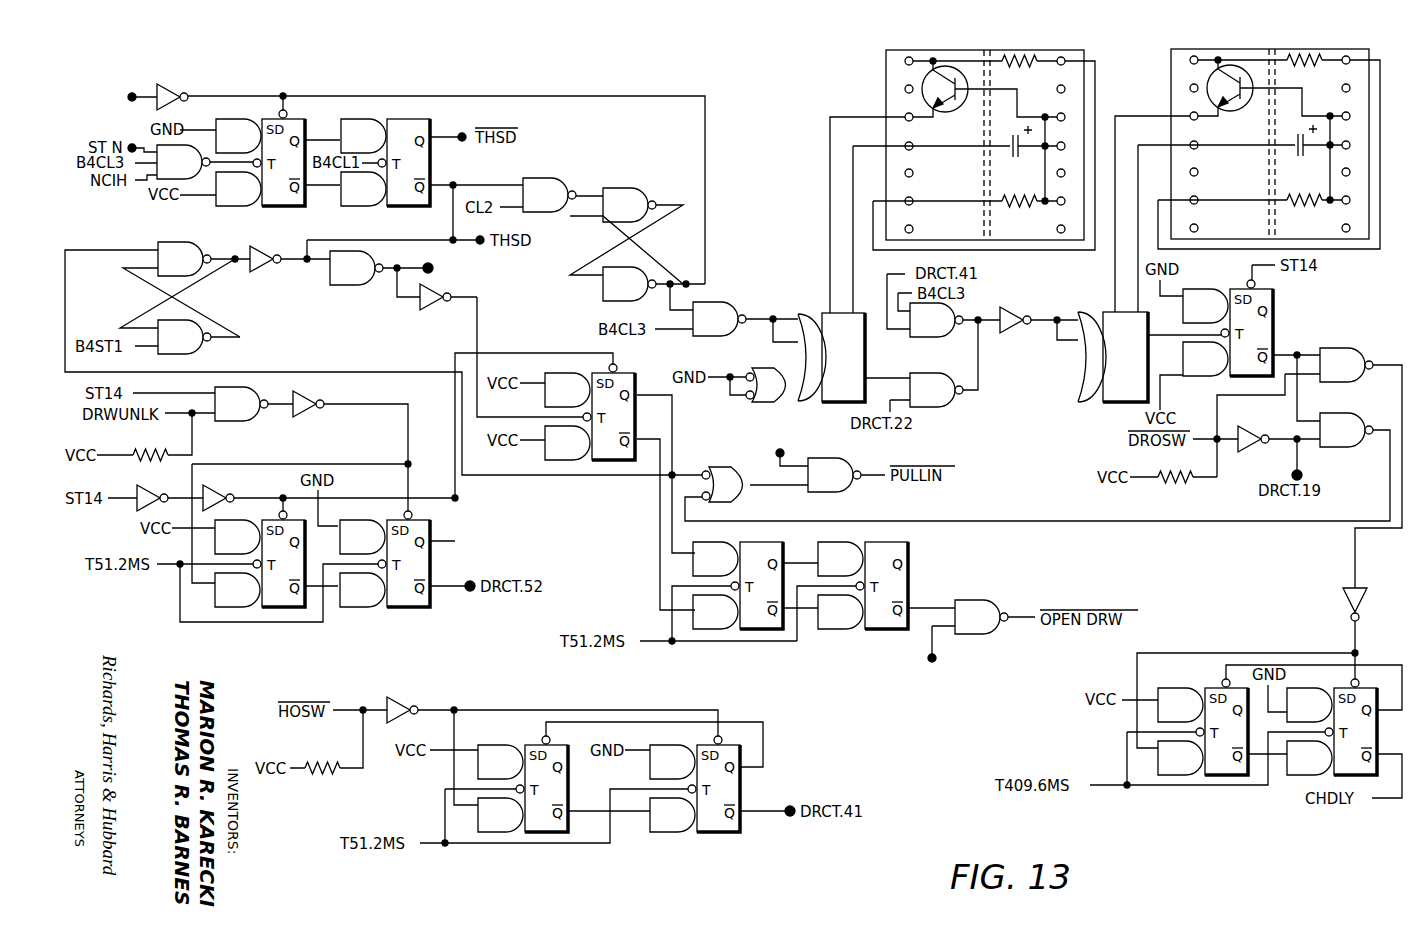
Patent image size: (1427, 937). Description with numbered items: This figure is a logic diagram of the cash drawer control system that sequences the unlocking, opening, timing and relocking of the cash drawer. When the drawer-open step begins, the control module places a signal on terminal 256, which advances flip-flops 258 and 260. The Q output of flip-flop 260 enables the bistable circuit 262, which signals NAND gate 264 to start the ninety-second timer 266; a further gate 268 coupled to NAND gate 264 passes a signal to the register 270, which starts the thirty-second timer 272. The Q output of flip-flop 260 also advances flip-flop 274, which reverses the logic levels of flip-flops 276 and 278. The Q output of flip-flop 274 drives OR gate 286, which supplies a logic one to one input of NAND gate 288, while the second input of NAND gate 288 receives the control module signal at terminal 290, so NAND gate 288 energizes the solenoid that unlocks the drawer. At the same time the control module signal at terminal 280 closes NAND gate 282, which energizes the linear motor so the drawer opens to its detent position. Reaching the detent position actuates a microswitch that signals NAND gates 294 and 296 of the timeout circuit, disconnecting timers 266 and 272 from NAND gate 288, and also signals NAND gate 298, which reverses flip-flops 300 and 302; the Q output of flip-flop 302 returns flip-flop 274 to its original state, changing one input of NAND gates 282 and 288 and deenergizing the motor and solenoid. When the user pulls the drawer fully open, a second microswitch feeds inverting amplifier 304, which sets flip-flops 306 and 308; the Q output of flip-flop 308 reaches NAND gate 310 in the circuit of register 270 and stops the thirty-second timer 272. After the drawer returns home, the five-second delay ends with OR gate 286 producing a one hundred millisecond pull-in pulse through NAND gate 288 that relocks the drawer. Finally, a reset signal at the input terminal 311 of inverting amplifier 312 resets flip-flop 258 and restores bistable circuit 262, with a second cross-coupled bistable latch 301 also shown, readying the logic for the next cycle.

The terminal 256 is at (132, 146).
The flip-flop 258 is at (281, 207).
The flip-flop 260 is at (409, 207).
The bistable circuit 262 is at (673, 254).
The NAND gate 264 is at (818, 313).
The 90 second timer 266 is at (886, 80).
The NOR gate 268 is at (836, 403).
The register 270 is at (1101, 312).
The 30 second timer 272 is at (1171, 80).
The flip-flop 274 is at (640, 388).
The flip-flop 276 is at (762, 632).
The flip-flop 278 is at (900, 632).
The terminal 280 is at (940, 660).
The NAND gate 282 is at (992, 605).
The OR gate 286 is at (741, 499).
The NAND gate 288 is at (841, 493).
The terminal 290 is at (780, 453).
The NAND gate 294 is at (1342, 350).
The NAND gate 296 is at (1335, 414).
The NAND gate 298 is at (230, 422).
The flip-flop 300 is at (290, 608).
The cross-coupled NAND latch 301 is at (232, 306).
The flip-flop 302 is at (413, 608).
The inverting amplifier 304 is at (396, 698).
The flip-flop 306 is at (545, 833).
The flip-flop 308 is at (715, 833).
The NAND gate 310 is at (942, 337).
The PORS input 311 is at (133, 94).
The inverting amplifier 312 is at (167, 85).